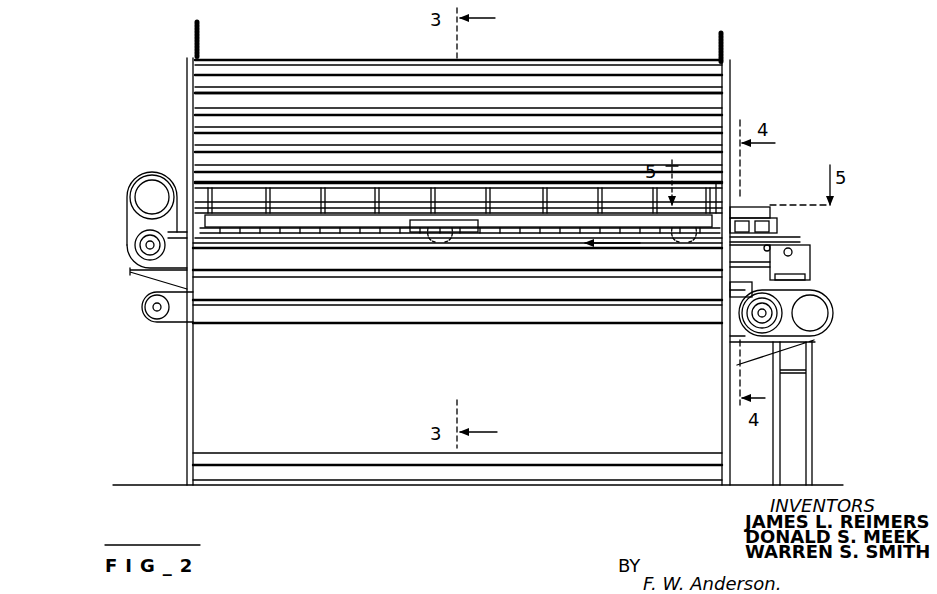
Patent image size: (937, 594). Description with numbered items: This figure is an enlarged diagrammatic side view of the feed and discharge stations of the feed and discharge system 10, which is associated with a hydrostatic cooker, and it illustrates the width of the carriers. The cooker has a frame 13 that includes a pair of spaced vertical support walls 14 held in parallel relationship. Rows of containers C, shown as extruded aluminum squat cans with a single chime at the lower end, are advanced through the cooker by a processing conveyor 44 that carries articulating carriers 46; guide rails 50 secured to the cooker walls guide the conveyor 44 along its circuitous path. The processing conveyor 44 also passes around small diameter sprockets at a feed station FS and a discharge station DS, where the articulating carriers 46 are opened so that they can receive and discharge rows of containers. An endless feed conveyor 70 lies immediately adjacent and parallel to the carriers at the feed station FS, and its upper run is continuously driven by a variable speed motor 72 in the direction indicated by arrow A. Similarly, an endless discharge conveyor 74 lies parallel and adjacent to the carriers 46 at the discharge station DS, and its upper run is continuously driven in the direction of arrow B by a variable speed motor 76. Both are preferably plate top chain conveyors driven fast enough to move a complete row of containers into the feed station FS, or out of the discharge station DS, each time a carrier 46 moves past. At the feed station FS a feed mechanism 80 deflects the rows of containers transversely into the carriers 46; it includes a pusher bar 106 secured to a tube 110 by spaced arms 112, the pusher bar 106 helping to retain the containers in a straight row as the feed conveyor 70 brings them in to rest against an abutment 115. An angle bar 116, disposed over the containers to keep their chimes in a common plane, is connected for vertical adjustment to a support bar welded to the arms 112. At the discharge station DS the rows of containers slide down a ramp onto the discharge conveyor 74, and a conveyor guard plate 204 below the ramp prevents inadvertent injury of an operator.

The feed and discharge system 10 is at (205, 170).
The frame 13 is at (185, 380).
The vertical support walls 14 is at (187, 60).
The processing conveyor 44 is at (194, 37).
The articulating carriers 46 is at (316, 60).
The guide rails 50 is at (198, 110).
The endless feed conveyor 70 is at (795, 240).
The variable speed motor 72 is at (140, 195).
The endless discharge conveyor 74 is at (142, 311).
The variable speed motor 76 is at (822, 318).
The feed mechanism 80 is at (492, 228).
The pusher bar 106 is at (380, 213).
The tube 110 is at (198, 182).
The spaced arms 112 is at (493, 212).
The abutment 115 is at (200, 238).
The angle bar 116 is at (338, 213).
The conveyor guard plate 204 is at (325, 383).
The direction arrow A is at (612, 248).
The direction arrow B is at (143, 288).
The containers C is at (562, 249).
The discharge station DS is at (616, 290).
The feed station FS is at (312, 227).